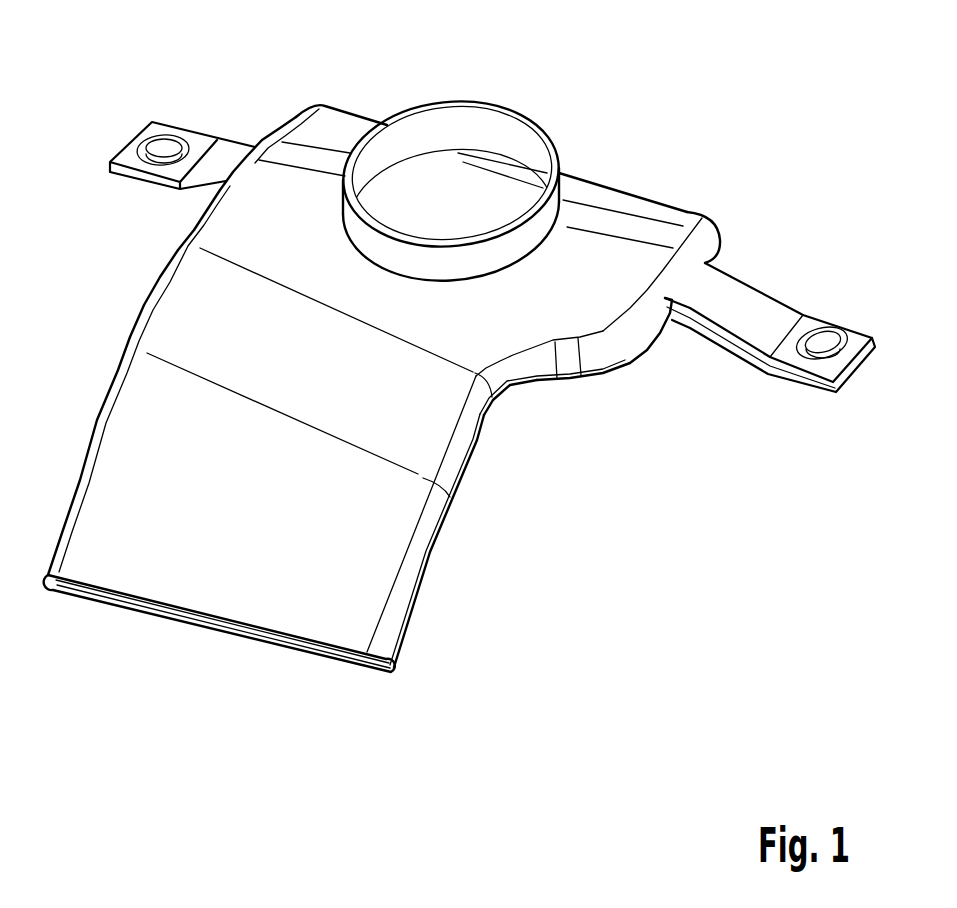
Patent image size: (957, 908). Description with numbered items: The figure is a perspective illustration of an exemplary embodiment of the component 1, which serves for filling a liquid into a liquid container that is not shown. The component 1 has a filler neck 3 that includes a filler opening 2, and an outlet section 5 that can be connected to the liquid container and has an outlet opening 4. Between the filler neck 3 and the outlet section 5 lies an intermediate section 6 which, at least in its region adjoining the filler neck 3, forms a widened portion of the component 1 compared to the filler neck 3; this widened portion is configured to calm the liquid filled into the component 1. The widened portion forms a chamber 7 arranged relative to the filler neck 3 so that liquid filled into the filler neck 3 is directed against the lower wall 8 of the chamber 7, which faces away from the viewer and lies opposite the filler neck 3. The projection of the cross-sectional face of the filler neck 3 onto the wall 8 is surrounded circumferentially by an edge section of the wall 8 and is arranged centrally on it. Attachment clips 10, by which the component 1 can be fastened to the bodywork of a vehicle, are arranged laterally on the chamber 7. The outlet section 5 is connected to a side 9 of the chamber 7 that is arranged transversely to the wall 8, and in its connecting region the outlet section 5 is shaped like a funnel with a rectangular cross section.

The component 1 is at (733, 117).
The filler opening 2 is at (470, 187).
The filler neck 3 is at (550, 207).
The outlet opening 4 is at (347, 662).
The outlet section 5 is at (391, 521).
The intermediate section 6 is at (602, 306).
The chamber 7 is at (632, 262).
The lower wall 8 is at (413, 205).
The side 9 is at (587, 356).
The attachment clips 10 is at (228, 158).